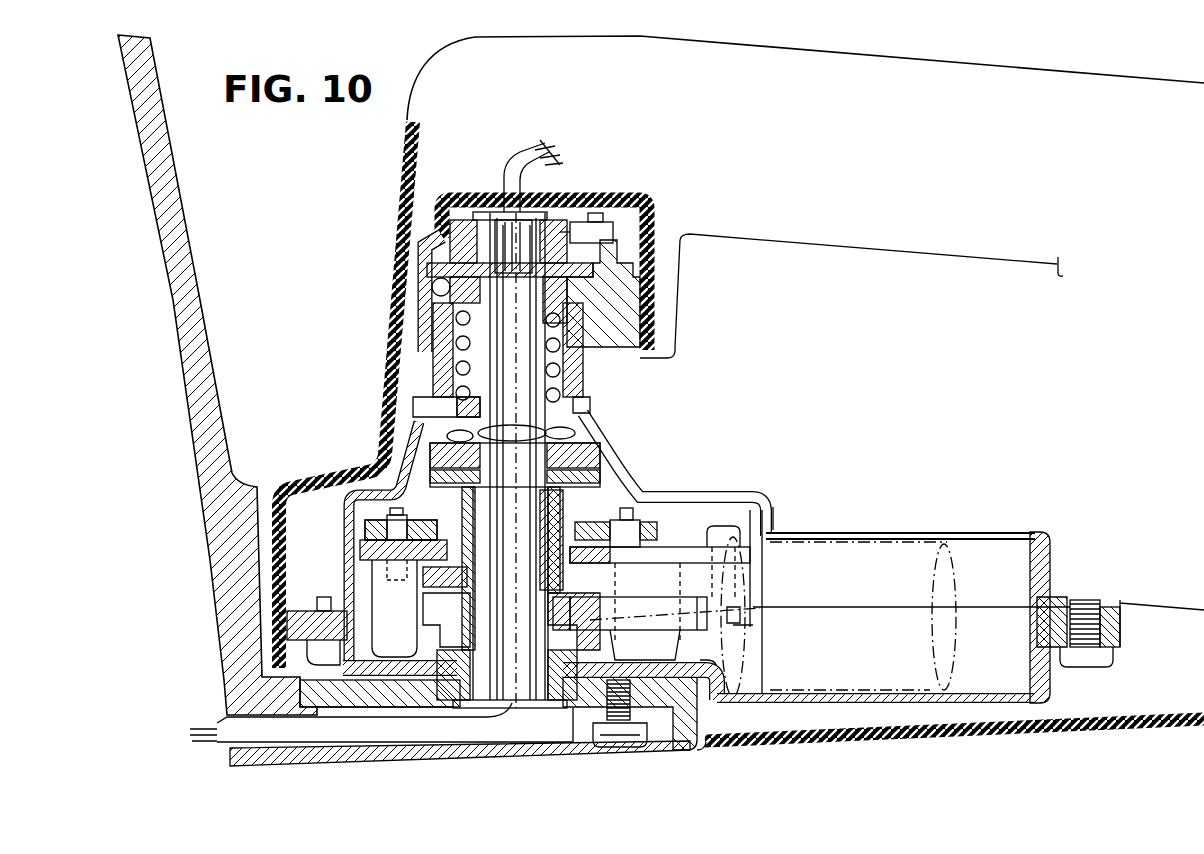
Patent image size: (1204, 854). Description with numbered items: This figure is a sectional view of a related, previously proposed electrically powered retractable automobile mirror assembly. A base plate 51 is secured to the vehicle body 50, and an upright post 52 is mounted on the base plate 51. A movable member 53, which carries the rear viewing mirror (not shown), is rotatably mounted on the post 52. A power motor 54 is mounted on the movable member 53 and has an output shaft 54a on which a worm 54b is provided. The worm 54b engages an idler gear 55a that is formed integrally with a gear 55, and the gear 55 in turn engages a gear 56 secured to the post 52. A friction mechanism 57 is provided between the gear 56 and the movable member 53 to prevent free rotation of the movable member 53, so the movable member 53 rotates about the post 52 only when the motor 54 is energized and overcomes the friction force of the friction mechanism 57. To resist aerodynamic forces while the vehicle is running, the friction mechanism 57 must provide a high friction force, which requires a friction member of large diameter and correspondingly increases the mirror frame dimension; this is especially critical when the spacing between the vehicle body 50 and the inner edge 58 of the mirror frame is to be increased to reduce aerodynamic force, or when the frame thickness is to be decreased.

The vehicle body 50 is at (223, 372).
The base plate 51 is at (375, 702).
The upright post 52 is at (500, 610).
The movable member 53 is at (514, 711).
The power motor 54 is at (850, 547).
The output shaft 54a is at (716, 602).
The worm 54b is at (706, 648).
The gear 55 is at (663, 573).
The idler gear 55a is at (712, 619).
The gear 56 is at (422, 592).
The friction mechanism 57 is at (613, 468).
The inner edge of the mirror frame 58 is at (393, 237).